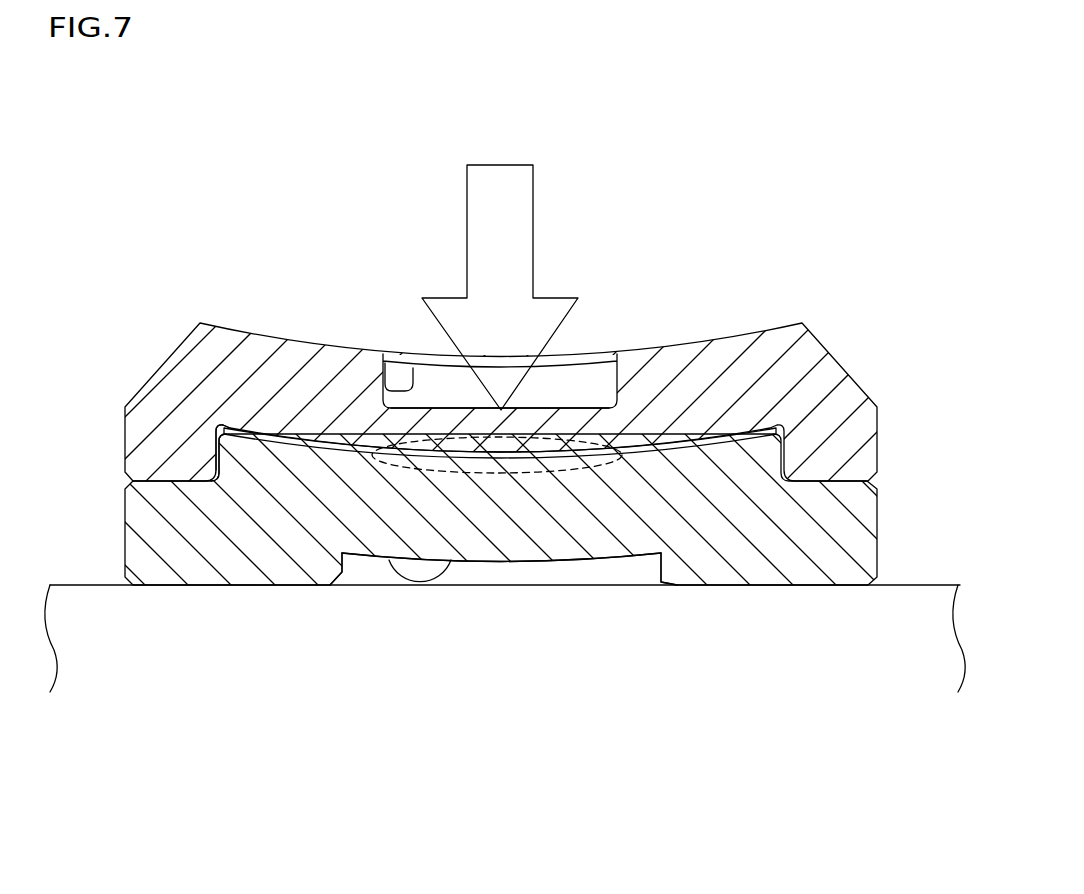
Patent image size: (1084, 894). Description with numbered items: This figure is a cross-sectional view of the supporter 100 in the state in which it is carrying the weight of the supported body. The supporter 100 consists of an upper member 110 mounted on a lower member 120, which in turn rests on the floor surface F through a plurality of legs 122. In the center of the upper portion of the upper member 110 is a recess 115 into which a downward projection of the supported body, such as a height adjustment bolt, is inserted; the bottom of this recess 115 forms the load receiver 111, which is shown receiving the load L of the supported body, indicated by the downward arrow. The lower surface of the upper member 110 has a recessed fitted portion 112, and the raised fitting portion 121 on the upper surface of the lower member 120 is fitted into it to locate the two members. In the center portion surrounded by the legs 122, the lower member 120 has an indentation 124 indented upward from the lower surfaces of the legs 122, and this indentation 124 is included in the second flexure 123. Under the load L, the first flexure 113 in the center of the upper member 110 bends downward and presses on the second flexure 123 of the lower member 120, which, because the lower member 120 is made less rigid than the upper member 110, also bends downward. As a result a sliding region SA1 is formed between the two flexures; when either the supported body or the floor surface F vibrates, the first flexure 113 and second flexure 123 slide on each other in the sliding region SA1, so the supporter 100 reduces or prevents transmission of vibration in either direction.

The supporter 100 is at (822, 313).
The upper member 110 is at (690, 338).
The load receiver 111 is at (430, 358).
The fitted portion 112 is at (247, 420).
The first flexure 113 is at (503, 426).
The recess 115 is at (393, 358).
The lower member 120 is at (877, 530).
The fitting portion 121 is at (217, 428).
The legs 122 is at (345, 560).
The second flexure 123 is at (510, 510).
The indentation 124 is at (383, 558).
The sliding region SA1 is at (523, 478).
The load L is at (535, 226).
The floor surface F is at (110, 583).